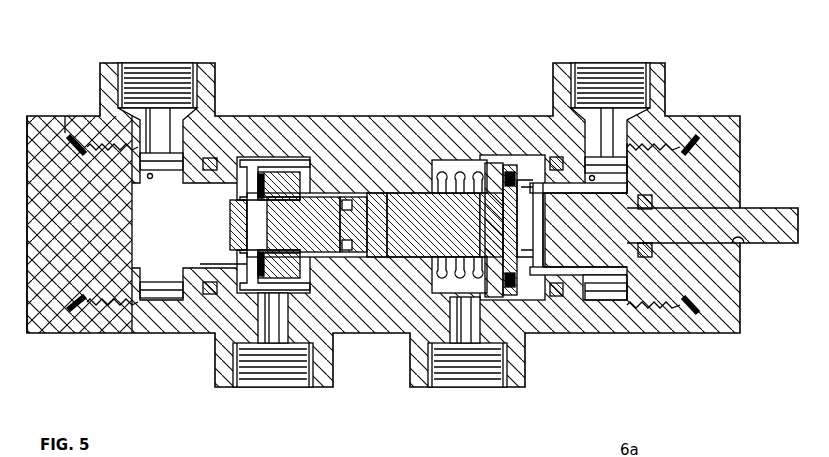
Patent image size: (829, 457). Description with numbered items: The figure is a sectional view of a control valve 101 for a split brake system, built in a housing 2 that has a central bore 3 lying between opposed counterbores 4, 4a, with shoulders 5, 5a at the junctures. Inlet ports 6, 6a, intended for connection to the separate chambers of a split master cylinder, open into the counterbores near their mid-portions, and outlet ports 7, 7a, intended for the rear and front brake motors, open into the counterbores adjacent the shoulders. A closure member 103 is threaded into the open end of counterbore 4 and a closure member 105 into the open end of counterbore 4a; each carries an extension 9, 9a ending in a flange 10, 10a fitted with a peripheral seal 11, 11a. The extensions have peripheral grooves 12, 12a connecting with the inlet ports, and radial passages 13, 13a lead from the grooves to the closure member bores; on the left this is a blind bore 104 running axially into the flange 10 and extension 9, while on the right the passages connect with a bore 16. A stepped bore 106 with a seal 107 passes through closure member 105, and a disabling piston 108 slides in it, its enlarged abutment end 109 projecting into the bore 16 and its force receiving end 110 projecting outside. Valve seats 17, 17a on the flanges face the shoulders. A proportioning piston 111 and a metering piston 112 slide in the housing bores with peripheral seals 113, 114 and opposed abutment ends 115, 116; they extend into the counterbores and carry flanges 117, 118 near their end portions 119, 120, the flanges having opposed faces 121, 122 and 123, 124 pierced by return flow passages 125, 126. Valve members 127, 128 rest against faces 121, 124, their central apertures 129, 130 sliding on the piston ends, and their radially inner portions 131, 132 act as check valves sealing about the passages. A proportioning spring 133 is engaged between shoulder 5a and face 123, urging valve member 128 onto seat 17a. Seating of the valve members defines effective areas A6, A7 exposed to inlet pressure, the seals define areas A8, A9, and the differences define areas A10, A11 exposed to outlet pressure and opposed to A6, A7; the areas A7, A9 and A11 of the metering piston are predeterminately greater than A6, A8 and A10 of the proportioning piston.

The control valve 101 is at (432, 32).
The housing 2 is at (357, 116).
The closure member 103 is at (46, 118).
The closure member 105 is at (728, 118).
The blind bore 104 is at (136, 262).
The stepped bore 106 is at (745, 245).
The seal 107 is at (654, 252).
The disabling member or piston 108 is at (703, 232).
The abutment end 109 is at (612, 239).
The force receiving end 110 is at (776, 208).
The inlet port 6 is at (186, 76).
The inlet port 6a is at (640, 76).
The outlet port 7 is at (305, 387).
The outlet port 7a is at (497, 387).
The peripheral groove 12 is at (146, 138).
The peripheral groove 12a is at (620, 140).
The radially extending passage 13 is at (147, 176).
The radially extending passage 13a is at (632, 176).
The extension 9 is at (166, 298).
The extension 9a is at (604, 300).
The end flange 10 is at (190, 292).
The end flange 10a is at (590, 300).
The peripheral seal 11 is at (206, 315).
The peripheral seal 11a is at (556, 158).
The counterbore 4 is at (142, 290).
The counterbore 4a is at (628, 300).
The shoulder 5 is at (298, 312).
The shoulder 5a is at (433, 326).
The bore 3 is at (330, 254).
The bore 16 is at (630, 273).
The valve seat 17 is at (246, 264).
The valve seat 17a is at (536, 264).
The proportioning piston 111 is at (340, 282).
The metering piston 112 is at (343, 275).
The peripheral seal 113 is at (362, 204).
The peripheral seal 114 is at (393, 262).
The abutment end 115 is at (388, 226).
The abutment end 116 is at (350, 212).
The radially extending flange 117 is at (281, 116).
The radially extending flange 118 is at (490, 128).
The piston end portion 119 is at (232, 203).
The piston end portion 120 is at (530, 208).
The annular face 121 is at (259, 157).
The annular face 122 is at (299, 160).
The annular face 123 is at (468, 164).
The annular face 124 is at (500, 164).
The return flow passage 125 is at (303, 224).
The return flow passage 126 is at (482, 206).
The valve member 127 is at (254, 289).
The valve member 128 is at (486, 295).
The central aperture 129 is at (242, 228).
The central aperture 130 is at (528, 236).
The radially inner portion 131 is at (246, 213).
The radially inner portion 132 is at (486, 247).
The metering or proportioning spring 133 is at (425, 128).
The effective area A6 is at (231, 155).
The effective area A7 is at (532, 335).
The effective area A8 is at (335, 335).
The effective area A9 is at (418, 172).
The effective area A10 is at (335, 180).
The effective area A11 is at (495, 368).